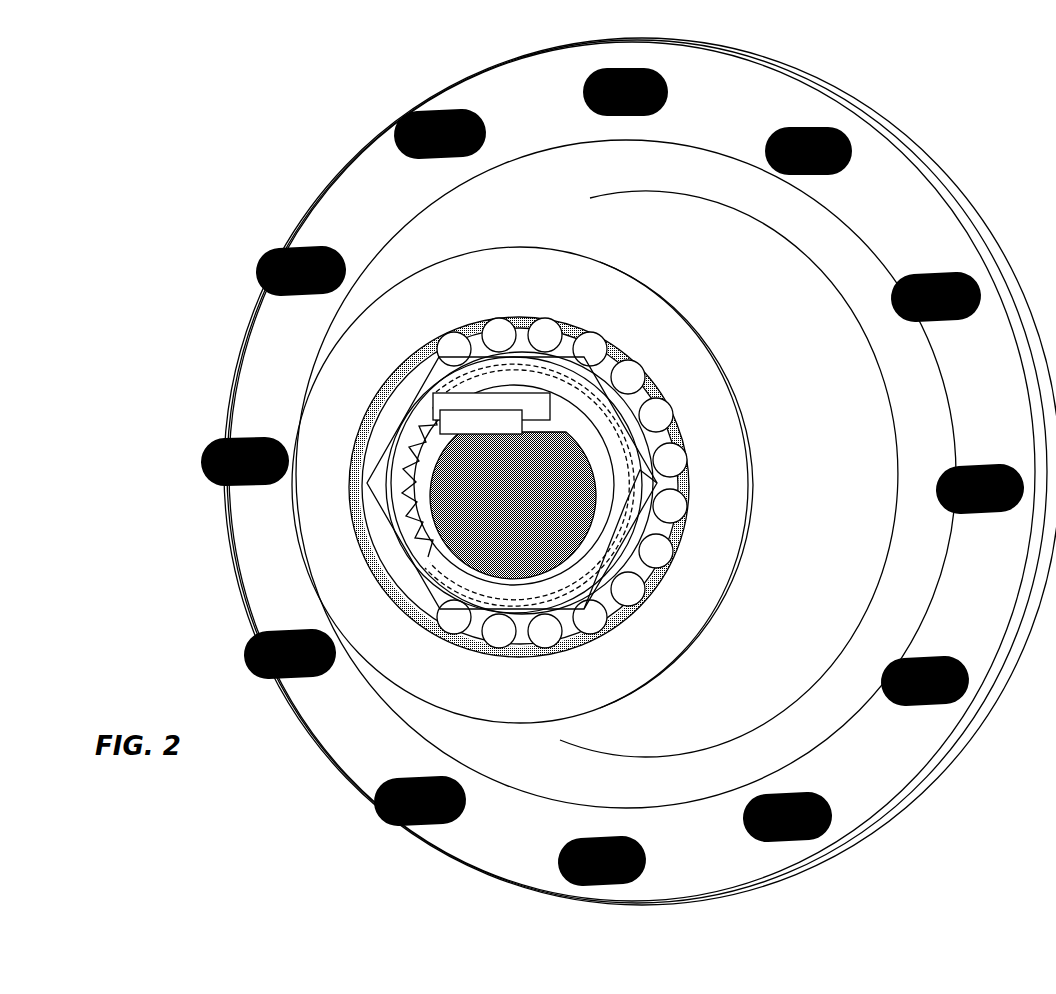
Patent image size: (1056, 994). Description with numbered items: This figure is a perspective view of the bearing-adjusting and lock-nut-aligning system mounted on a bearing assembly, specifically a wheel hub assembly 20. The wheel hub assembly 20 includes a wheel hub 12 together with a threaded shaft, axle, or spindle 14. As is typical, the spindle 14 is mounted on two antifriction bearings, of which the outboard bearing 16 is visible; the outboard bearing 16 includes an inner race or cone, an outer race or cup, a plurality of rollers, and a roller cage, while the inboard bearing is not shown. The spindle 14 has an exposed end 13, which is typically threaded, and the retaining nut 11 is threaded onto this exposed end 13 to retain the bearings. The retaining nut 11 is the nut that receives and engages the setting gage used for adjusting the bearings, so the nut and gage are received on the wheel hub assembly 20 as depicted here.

The retaining nut 11 is at (382, 478).
The hub 12 is at (811, 441).
The exposed end 13 is at (490, 517).
The spindle 14 is at (485, 492).
The outboard bearing 16 is at (628, 375).
The wheel hub assembly 20 is at (895, 760).